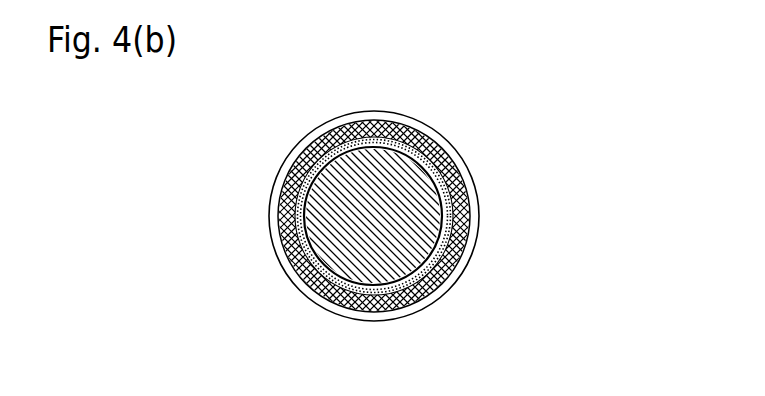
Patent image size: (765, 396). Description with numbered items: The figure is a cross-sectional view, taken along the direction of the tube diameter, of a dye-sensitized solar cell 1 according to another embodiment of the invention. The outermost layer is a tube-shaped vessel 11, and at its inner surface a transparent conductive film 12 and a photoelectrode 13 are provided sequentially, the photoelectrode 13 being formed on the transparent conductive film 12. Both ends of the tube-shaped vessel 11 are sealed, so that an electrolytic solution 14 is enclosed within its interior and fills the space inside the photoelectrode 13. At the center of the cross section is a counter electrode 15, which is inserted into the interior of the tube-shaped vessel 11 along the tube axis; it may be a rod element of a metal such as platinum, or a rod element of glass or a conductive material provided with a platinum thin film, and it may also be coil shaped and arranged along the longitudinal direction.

The dye-sensitized solar cell 1 is at (372, 92).
The tube-shaped vessel 11 is at (290, 170).
The transparent conductive film 12 is at (290, 238).
The photoelectrode 13 is at (443, 160).
The electrolytic solution 14 is at (445, 255).
The counter electrode 15 is at (343, 280).